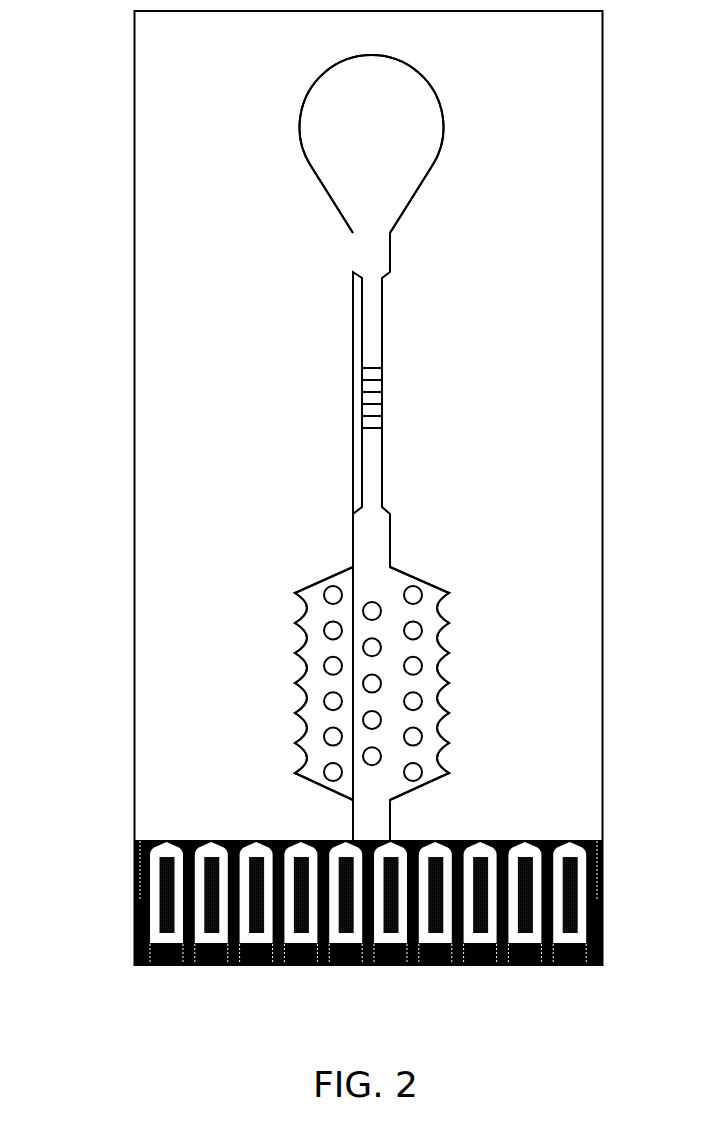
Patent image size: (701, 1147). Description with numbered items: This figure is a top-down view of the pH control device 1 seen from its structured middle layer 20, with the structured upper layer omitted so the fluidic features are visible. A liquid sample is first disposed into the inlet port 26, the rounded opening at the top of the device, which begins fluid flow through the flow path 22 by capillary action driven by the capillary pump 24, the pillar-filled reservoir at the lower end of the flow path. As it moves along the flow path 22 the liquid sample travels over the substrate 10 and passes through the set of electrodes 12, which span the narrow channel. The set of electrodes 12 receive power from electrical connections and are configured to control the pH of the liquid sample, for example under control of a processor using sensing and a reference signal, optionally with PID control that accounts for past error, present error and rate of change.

The pH control device 1 is at (118, 1018).
The substrate 10 is at (373, 333).
The set of electrodes 12 is at (387, 368).
The structured middle layer 20 is at (150, 734).
The flow path 22 is at (372, 467).
The capillary pump 24 is at (443, 700).
The inlet port 26 is at (316, 181).